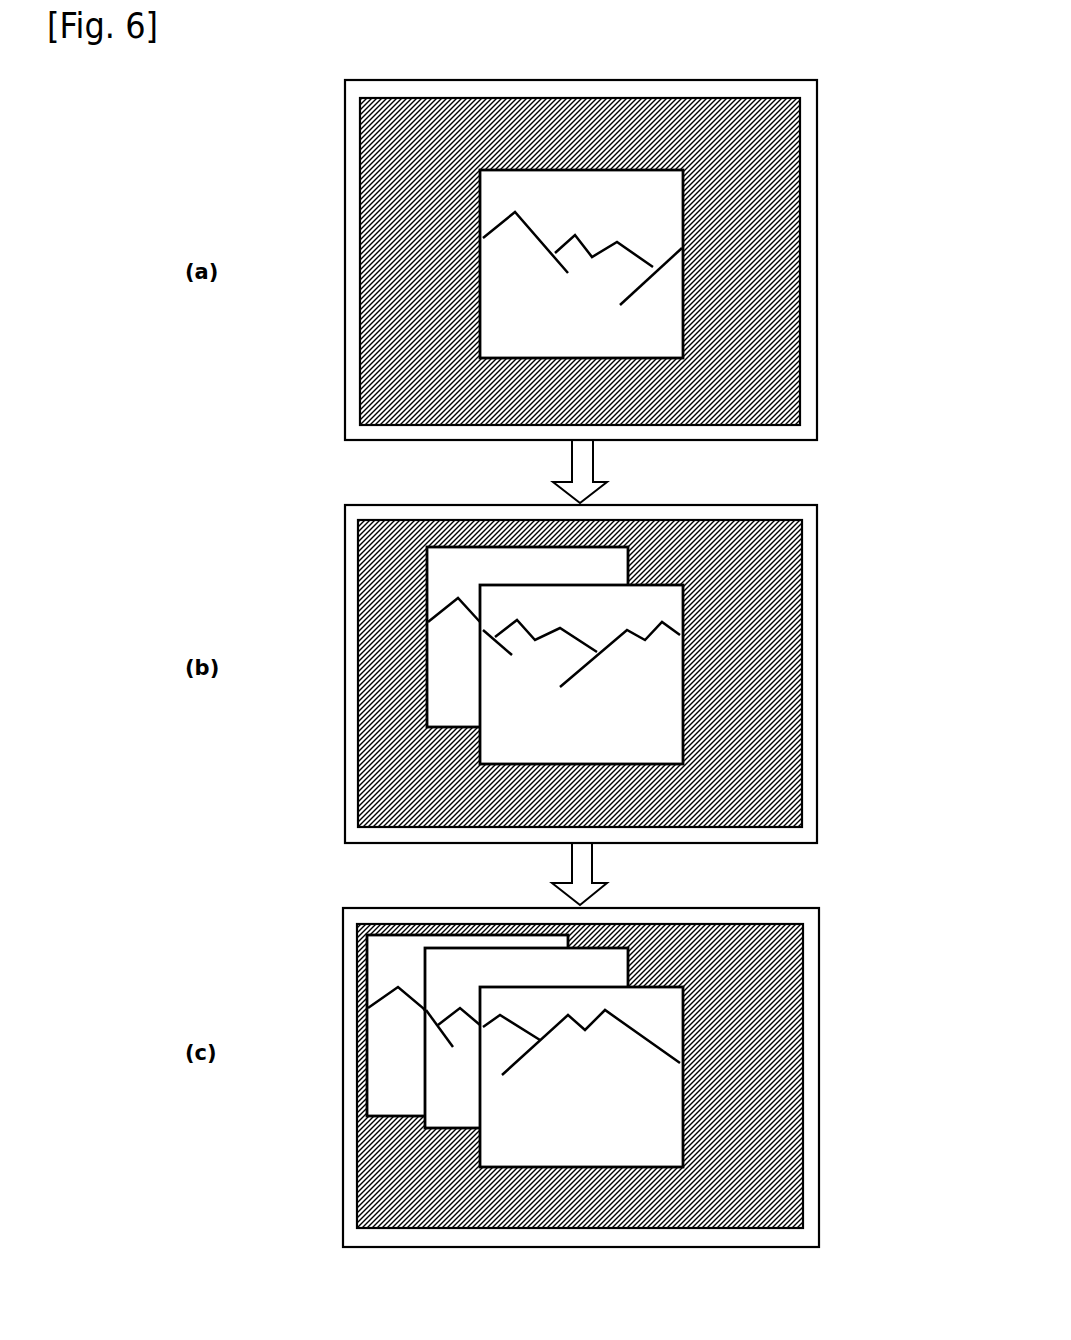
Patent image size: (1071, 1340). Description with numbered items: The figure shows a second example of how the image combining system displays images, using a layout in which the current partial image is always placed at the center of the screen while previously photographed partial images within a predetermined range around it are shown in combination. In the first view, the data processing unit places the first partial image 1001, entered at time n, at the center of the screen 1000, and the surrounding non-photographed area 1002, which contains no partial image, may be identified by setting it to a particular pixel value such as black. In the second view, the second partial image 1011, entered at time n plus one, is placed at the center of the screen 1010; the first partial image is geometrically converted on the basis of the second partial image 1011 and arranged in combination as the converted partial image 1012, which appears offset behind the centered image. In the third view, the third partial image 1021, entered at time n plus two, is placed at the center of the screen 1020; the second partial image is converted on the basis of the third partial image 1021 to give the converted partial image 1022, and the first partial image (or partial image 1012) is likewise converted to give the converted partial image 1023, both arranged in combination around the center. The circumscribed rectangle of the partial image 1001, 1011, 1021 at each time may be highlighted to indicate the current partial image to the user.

The screen 1000 is at (817, 178).
The first partial image 1001 is at (698, 328).
The non-photographed area 1002 is at (358, 370).
The screen 1010 is at (817, 590).
The second partial image 1011 is at (693, 730).
The converted partial image 1012 is at (478, 547).
The screen 1020 is at (819, 992).
The third partial image 1021 is at (690, 1132).
The converted partial image 1022 is at (663, 948).
The converted partial image 1023 is at (420, 930).